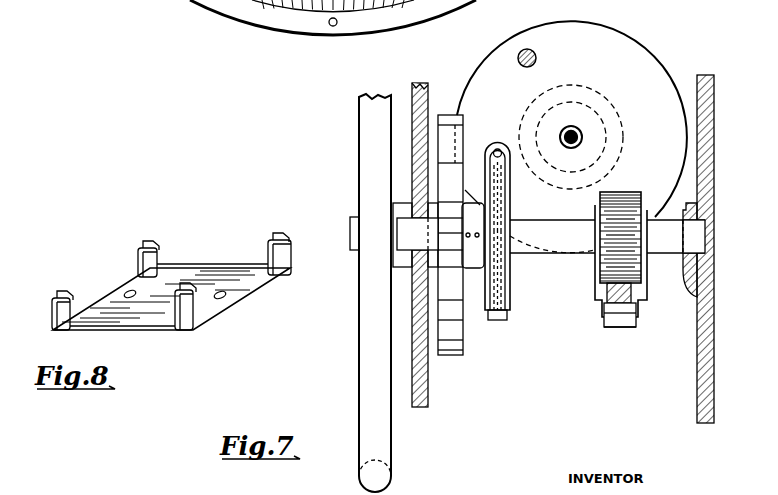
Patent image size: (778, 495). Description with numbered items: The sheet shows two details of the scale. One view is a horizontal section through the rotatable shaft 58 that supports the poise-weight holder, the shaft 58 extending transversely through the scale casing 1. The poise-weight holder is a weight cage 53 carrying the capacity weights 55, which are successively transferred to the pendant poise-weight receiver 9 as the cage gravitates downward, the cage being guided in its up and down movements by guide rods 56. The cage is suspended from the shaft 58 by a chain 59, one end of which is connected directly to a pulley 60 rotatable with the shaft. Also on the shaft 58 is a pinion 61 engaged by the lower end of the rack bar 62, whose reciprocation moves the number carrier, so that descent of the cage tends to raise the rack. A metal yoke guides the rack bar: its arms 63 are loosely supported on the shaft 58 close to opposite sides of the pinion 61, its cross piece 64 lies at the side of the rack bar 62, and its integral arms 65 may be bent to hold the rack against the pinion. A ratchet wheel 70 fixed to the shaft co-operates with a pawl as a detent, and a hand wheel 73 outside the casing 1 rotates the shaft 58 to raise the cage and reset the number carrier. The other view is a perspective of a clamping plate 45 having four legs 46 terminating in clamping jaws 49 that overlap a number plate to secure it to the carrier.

In FIG. 7, the scale casing 1 is at (420, 86).
In FIG. 7, the poise-weight receiver 9 is at (572, 100).
In FIG. 8, the clamping plate 45 is at (127, 331).
In FIG. 8, the legs 46 is at (52, 316).
In FIG. 8, the clamping jaws 49 is at (86, 281).
In FIG. 7, the weight cage 53 is at (602, 27).
In FIG. 7, the weights 55 is at (618, 116).
In FIG. 7, the guide rods 56 is at (535, 56).
In FIG. 7, the rotatable shaft 58 is at (540, 250).
In FIG. 7, the chain 59 is at (494, 322).
In FIG. 7, the pulley 60 is at (509, 197).
In FIG. 7, the pinion 61 is at (625, 193).
In FIG. 7, the rack bar 62 is at (605, 298).
In FIG. 7, the yoke arms 63 is at (596, 280).
In FIG. 7, the cross piece 64 is at (605, 313).
In FIG. 7, the yoke arms 65 is at (623, 328).
In FIG. 7, the ratchet wheel 70 is at (449, 356).
In FIG. 7, the hand wheel 73 is at (362, 391).